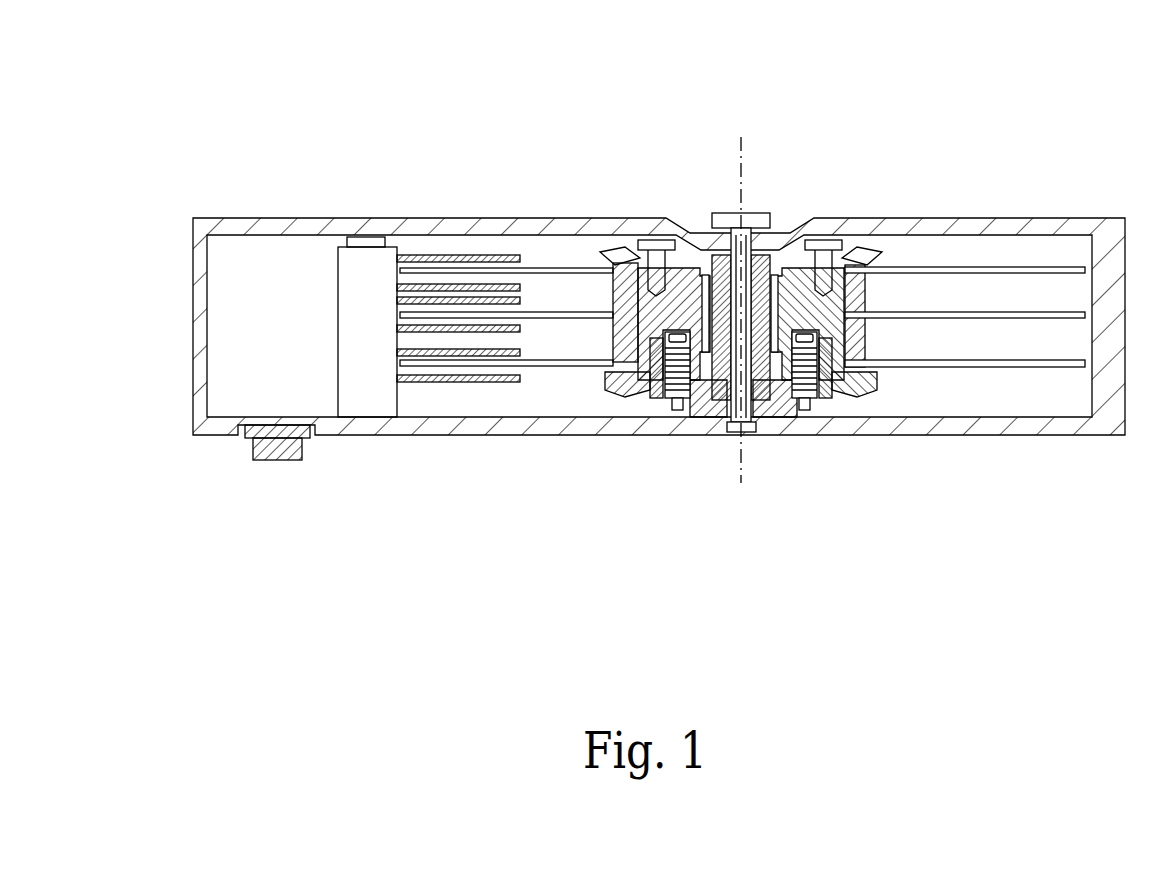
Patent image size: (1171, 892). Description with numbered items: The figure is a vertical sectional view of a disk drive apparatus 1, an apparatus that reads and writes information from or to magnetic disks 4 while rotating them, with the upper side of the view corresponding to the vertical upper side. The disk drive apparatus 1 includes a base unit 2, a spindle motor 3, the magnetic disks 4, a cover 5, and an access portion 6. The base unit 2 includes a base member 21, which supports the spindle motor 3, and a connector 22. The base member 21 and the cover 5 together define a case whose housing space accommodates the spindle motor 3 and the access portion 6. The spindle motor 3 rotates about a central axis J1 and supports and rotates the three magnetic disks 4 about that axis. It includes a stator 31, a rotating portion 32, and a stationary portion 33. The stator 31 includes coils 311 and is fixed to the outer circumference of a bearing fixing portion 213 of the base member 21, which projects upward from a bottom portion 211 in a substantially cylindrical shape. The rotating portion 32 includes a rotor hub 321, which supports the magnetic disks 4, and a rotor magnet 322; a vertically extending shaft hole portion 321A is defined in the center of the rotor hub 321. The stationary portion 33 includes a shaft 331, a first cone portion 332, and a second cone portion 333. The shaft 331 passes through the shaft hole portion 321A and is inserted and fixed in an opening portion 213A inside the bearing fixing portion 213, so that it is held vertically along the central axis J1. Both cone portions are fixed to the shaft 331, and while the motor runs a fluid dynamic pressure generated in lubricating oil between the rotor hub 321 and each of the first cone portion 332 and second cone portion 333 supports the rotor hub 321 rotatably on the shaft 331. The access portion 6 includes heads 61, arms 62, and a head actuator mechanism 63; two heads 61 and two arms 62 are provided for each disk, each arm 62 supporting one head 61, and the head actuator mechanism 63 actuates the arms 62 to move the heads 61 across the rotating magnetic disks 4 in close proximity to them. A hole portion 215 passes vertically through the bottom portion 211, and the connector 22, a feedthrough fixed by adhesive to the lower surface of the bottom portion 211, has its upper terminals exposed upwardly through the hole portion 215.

The disk drive apparatus 1 is at (412, 120).
The base unit 2 is at (659, 370).
The base member 21 is at (1047, 435).
The bottom portion 211 is at (895, 435).
The bearing fixing portion 213 is at (795, 413).
The opening portion 213A is at (758, 412).
The hole portion 215 is at (250, 440).
The connector 22 is at (298, 462).
The spindle motor 3 is at (731, 314).
The stator 31 is at (650, 426).
The coils 311 is at (685, 412).
The rotating portion 32 is at (615, 262).
The rotor hub 321 is at (645, 240).
The shaft hole portion 321A is at (820, 240).
The rotor magnet 322 is at (653, 405).
The stationary portion 33 is at (712, 325).
The shaft 331 is at (792, 250).
The first cone portion 332 is at (768, 290).
The second cone portion 333 is at (724, 432).
The magnetic disks 4 is at (1035, 268).
The cover 5 is at (253, 218).
The access portion 6 is at (475, 271).
The heads 61 is at (525, 268).
The arms 62 is at (472, 257).
The head actuator mechanism 63 is at (390, 237).
The central axis J1 is at (742, 140).